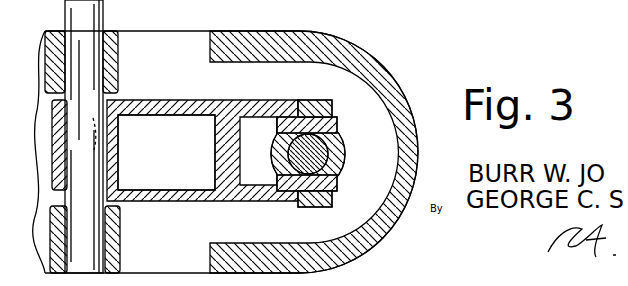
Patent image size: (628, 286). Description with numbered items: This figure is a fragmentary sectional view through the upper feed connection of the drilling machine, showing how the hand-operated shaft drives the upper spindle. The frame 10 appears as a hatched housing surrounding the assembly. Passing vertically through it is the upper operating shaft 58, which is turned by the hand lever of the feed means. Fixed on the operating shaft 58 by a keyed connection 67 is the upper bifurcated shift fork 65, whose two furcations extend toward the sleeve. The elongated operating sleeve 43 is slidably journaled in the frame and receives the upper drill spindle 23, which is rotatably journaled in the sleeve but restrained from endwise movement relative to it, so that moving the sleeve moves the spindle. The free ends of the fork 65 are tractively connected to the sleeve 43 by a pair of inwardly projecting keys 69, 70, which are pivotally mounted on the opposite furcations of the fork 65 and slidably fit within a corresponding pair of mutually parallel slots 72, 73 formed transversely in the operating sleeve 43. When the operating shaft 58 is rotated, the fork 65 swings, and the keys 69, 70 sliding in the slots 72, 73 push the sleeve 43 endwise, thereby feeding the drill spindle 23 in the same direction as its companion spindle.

The frame 10 is at (386, 58).
The upper operating shaft 58 is at (65, 21).
The upper bifurcated shift fork 65 is at (162, 105).
The keyed connection 67 is at (110, 140).
The key 70 is at (312, 112).
The slot 72 is at (282, 138).
The slot 73 is at (282, 169).
The drill spindle 23 is at (335, 147).
The operating sleeve 43 is at (344, 160).
The key 69 is at (316, 200).